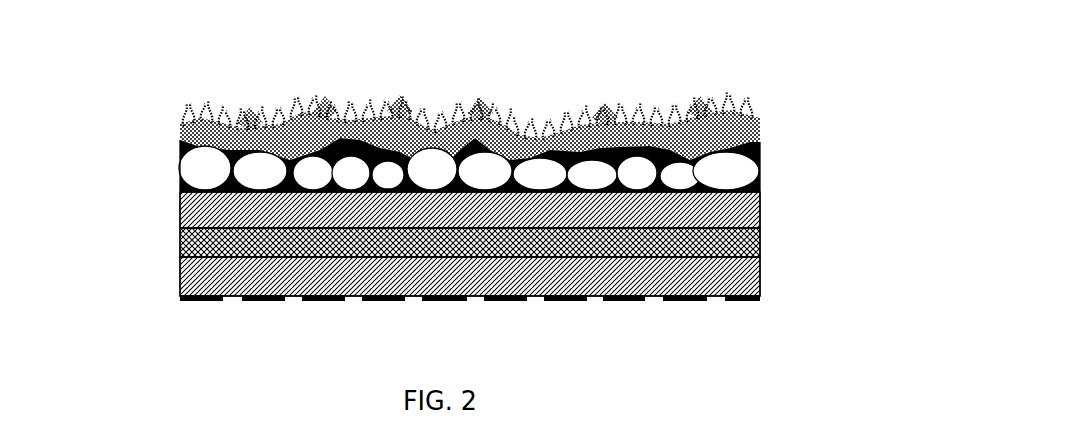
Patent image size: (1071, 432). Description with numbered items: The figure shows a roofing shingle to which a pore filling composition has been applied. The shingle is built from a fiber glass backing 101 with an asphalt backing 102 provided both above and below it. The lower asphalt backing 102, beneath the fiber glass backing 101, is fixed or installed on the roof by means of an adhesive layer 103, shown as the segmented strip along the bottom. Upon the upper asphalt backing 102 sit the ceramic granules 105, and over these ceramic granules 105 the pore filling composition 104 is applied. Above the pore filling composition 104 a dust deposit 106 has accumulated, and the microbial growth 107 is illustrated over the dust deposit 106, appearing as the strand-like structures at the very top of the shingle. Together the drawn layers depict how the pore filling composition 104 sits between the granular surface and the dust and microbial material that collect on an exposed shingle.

The fiber glass backing 101 is at (720, 243).
The asphalt backing 102 is at (760, 210).
The adhesive layer 103 is at (630, 300).
The pore filling composition 104 is at (177, 168).
The ceramic granules 105 is at (742, 190).
The dust deposit 106 is at (728, 125).
The microbial growth 107 is at (703, 112).